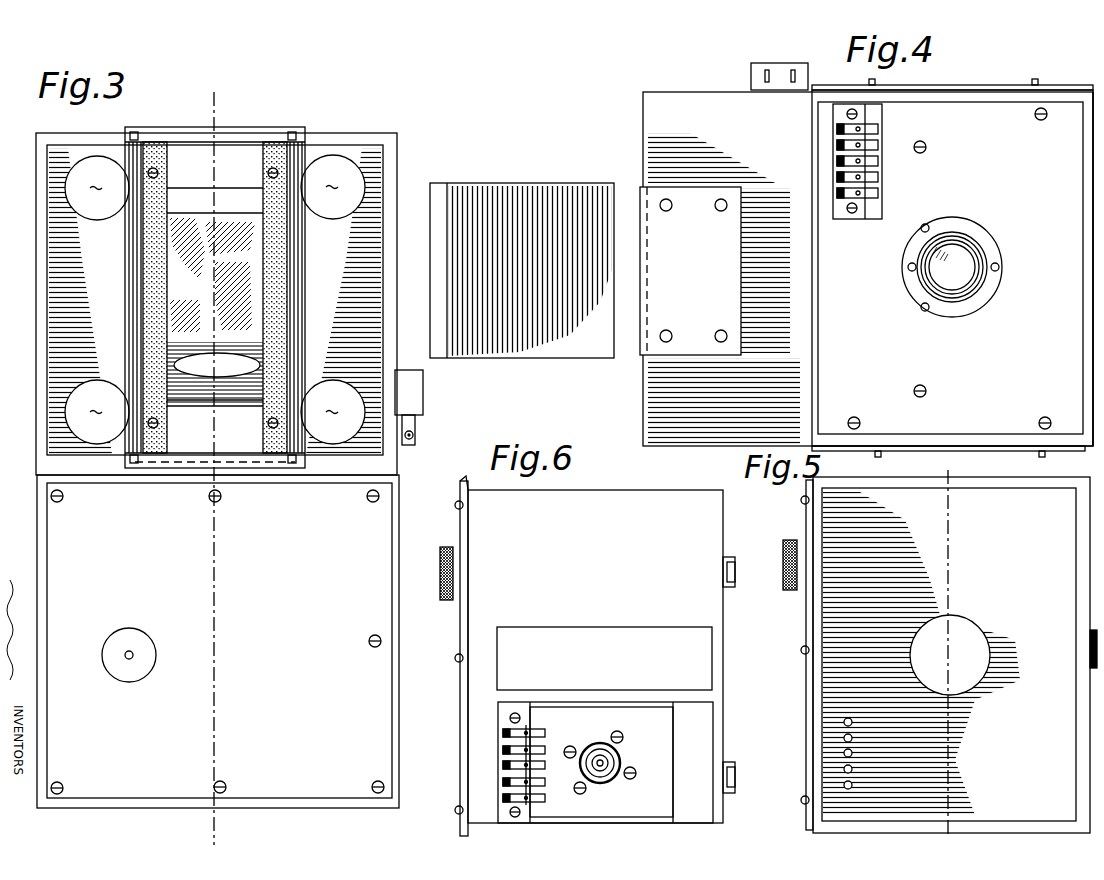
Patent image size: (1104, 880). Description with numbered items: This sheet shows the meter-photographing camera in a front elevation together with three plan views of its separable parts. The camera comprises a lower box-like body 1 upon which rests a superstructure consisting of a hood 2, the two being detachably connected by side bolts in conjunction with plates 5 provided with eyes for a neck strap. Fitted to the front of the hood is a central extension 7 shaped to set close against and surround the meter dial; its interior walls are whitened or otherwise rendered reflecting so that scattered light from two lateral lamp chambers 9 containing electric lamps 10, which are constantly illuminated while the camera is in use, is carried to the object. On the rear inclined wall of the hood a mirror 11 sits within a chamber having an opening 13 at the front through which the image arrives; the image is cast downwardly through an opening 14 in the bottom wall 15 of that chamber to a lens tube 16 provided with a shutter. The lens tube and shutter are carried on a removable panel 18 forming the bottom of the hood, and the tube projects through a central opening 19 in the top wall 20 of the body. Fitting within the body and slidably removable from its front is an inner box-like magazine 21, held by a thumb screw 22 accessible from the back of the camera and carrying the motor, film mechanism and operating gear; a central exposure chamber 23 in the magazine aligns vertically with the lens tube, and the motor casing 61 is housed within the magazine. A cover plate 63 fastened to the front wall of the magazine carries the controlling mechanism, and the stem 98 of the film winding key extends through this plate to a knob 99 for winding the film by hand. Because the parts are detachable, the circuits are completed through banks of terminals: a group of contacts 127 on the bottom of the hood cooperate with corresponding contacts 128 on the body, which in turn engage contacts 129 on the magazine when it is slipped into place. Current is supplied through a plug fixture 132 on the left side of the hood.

In FIG. 5, the body 1 is at (1087, 484).
In FIG. 3, the hood 2 is at (36, 325).
In FIG. 4, the hood 2 is at (1095, 92).
In FIG. 4, the plates 5 is at (1003, 88).
In FIG. 3, the central extension 7 is at (303, 320).
In FIG. 4, the central extension 7 is at (526, 183).
In FIG. 3, the lamp chambers 9 is at (72, 283).
In FIG. 3, the electric lamps 10 is at (68, 199).
In FIG. 3, the mirror 11 is at (205, 295).
In FIG. 5, the mirror 11 is at (985, 466).
In FIG. 3, the opening 13 is at (255, 97).
In FIG. 3, the opening 14 is at (227, 357).
In FIG. 3, the bottom wall 15 is at (244, 390).
In FIG. 4, the lens tube 16 is at (972, 257).
In FIG. 4, the removable panel 18 is at (1010, 324).
In FIG. 5, the central opening 19 is at (966, 621).
In FIG. 5, the top wall 20 is at (949, 654).
In FIG. 6, the magazine 21 is at (601, 656).
In FIG. 5, the thumb screw 22 is at (1090, 636).
In FIG. 6, the central exposure chamber 23 is at (604, 658).
In FIG. 6, the motor casing 61 is at (640, 800).
In FIG. 3, the cover plate 63 is at (76, 538).
In FIG. 6, the cover plate 63 is at (462, 520).
In FIG. 5, the cover plate 63 is at (803, 508).
In FIG. 3, the stem 98 is at (134, 655).
In FIG. 3, the knob 99 is at (148, 644).
In FIG. 6, the knob 99 is at (442, 602).
In FIG. 5, the knob 99 is at (790, 592).
In FIG. 4, the group of contacts 127 is at (882, 174).
In FIG. 5, the contacts 128 is at (843, 722).
In FIG. 6, the contacts 129 is at (547, 733).
In FIG. 3, the plug fixture 132 is at (438, 390).
In FIG. 4, the plug fixture 132 is at (775, 63).